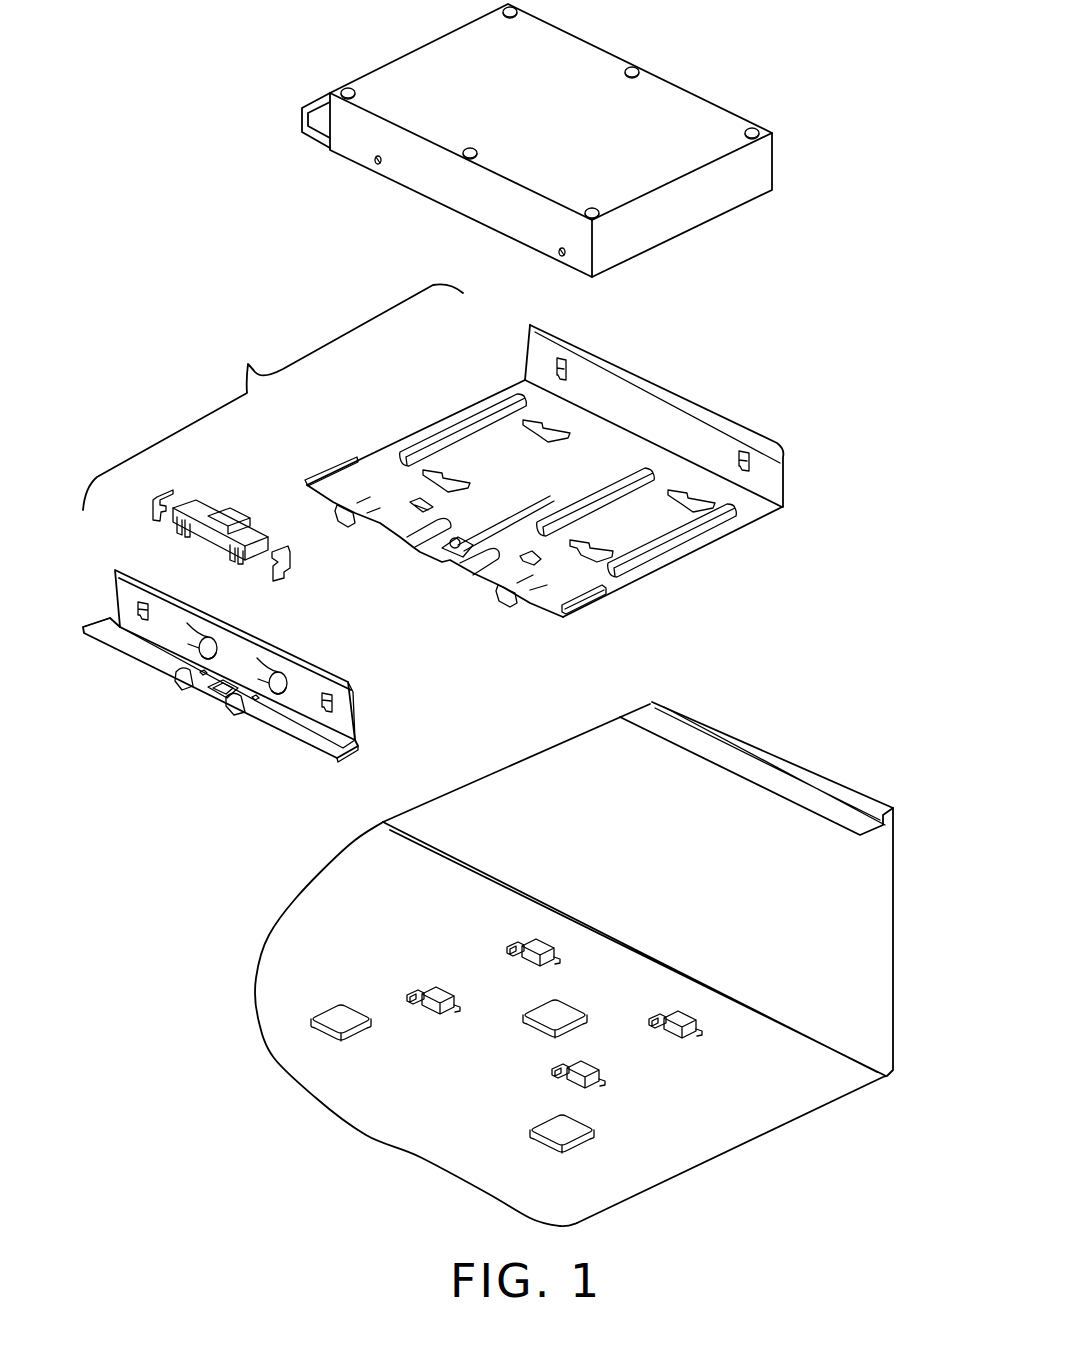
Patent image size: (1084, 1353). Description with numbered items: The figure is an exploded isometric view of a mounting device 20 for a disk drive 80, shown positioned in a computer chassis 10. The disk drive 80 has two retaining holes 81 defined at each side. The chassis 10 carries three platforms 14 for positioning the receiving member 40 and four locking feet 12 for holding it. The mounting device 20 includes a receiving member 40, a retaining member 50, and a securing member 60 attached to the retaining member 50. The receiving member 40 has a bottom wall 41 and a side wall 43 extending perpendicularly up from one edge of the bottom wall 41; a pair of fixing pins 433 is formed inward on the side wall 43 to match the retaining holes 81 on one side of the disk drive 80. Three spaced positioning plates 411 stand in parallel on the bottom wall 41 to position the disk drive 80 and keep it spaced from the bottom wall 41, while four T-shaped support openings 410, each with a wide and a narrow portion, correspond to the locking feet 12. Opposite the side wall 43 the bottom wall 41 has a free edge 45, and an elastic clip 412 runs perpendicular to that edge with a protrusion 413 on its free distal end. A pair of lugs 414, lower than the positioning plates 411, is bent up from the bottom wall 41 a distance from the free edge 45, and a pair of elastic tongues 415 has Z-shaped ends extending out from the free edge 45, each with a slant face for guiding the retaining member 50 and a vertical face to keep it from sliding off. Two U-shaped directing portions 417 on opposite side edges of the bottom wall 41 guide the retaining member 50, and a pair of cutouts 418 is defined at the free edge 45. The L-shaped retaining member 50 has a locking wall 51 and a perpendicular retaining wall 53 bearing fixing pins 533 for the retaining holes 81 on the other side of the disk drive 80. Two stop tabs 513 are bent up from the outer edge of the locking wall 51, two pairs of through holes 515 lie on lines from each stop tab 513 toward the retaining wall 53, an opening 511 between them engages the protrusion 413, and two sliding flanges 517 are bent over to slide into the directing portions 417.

The computer chassis 10 is at (299, 943).
The locking feet 12 is at (415, 1005).
The platforms 14 is at (316, 1006).
The mounting device 20 is at (273, 397).
The receiving member 40 is at (561, 500).
The bottom wall 41 is at (748, 509).
The side wall 43 is at (625, 403).
The free edge 45 is at (312, 492).
The retaining member 50 is at (264, 692).
The locking wall 51 is at (318, 742).
The retaining wall 53 is at (243, 662).
The securing member 60 is at (222, 480).
The disk drive 80 is at (748, 90).
The retaining holes 81 is at (373, 164).
The support openings 410 is at (593, 552).
The positioning plates 411 is at (688, 542).
The elastic clip 412 is at (482, 534).
The protrusion 413 is at (427, 550).
The lugs 414 is at (520, 553).
The elastic tongues 415 is at (529, 600).
The directing portions 417 is at (580, 605).
The cutouts 418 is at (380, 522).
The fixing pins 433 is at (747, 455).
The opening 511 is at (212, 693).
The stop tabs 513 is at (178, 681).
The through holes 515 is at (259, 700).
The sliding flanges 517 is at (358, 744).
The fixing pins 533 is at (331, 703).